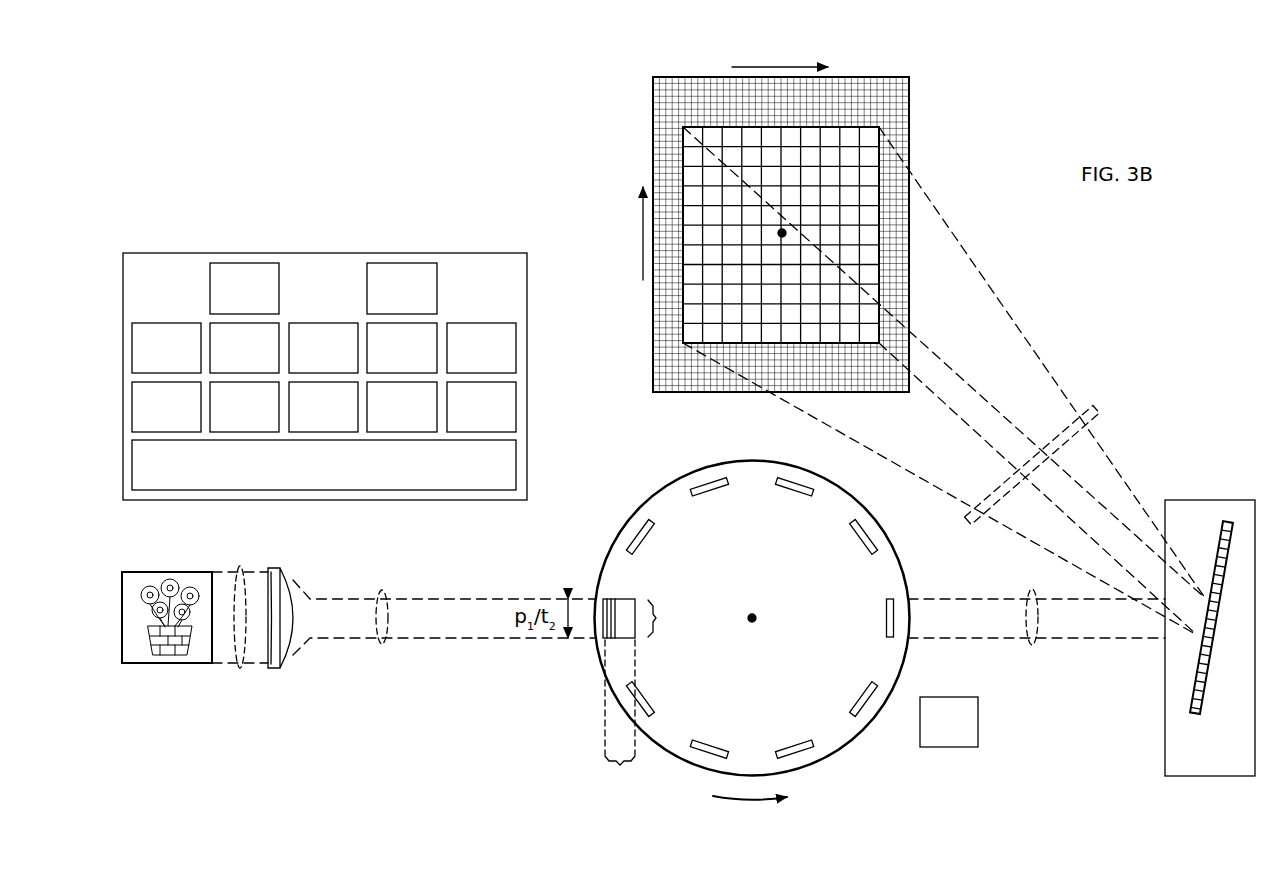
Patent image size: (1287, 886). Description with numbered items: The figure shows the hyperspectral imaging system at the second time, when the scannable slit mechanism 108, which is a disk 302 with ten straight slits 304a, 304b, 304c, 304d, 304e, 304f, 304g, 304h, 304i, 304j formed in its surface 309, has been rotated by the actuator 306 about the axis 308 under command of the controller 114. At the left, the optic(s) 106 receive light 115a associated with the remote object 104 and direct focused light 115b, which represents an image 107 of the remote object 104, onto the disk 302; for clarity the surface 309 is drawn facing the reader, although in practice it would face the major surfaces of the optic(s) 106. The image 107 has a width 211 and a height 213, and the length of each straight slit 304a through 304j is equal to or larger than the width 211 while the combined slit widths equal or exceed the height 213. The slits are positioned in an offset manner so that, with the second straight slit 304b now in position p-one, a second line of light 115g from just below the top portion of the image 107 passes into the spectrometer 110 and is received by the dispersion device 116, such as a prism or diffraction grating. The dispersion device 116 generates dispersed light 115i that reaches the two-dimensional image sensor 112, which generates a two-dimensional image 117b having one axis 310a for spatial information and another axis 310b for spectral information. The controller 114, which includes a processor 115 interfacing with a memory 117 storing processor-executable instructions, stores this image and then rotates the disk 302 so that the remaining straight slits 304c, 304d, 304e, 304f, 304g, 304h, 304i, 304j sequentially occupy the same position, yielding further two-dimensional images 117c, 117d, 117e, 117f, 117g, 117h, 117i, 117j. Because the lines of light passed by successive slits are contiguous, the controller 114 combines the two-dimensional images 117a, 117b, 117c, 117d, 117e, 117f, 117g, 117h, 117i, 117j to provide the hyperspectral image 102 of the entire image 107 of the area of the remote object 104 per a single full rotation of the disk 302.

The hyperspectral image 102 is at (324, 465).
The remote object 104 is at (166, 663).
The optic(s) 106 is at (280, 568).
The image 107 is at (640, 598).
The scannable slit mechanism 108 is at (838, 757).
The spectrometer 110 is at (1210, 776).
The two-dimensional image sensor 112 is at (653, 100).
The controller 114 is at (323, 253).
The processor 115 is at (244, 288).
The light 115a is at (240, 670).
The focused light 115b is at (382, 646).
The second line of light 115g is at (1032, 647).
The dispersed light 115i is at (1093, 414).
The dispersion device 116 is at (1193, 715).
The memory 117 is at (402, 288).
The two-dimensional image 117a is at (166, 348).
The two-dimensional image 117b is at (683, 148).
The two-dimensional image 117c is at (323, 348).
The two-dimensional image 117d is at (402, 348).
The two-dimensional image 117e is at (481, 348).
The two-dimensional image 117f is at (166, 407).
The two-dimensional image 117g is at (244, 407).
The two-dimensional image 117h is at (323, 407).
The two-dimensional image 117i is at (402, 407).
The two-dimensional image 117j is at (481, 407).
The width of the image 211 is at (620, 717).
The height of the image 213 is at (675, 618).
The disk 302 is at (688, 769).
The first straight slit 304a is at (648, 702).
The second straight slit 304b is at (604, 599).
The straight slit 304c is at (631, 528).
The straight slit 304d is at (707, 482).
The straight slit 304e is at (790, 492).
The straight slit 304f is at (872, 530).
The straight slit 304g is at (900, 616).
The straight slit 304h is at (860, 699).
The straight slit 304i is at (793, 745).
The straight slit 304j is at (714, 745).
The actuator 306 is at (949, 722).
The axis 308 is at (753, 626).
The disk surface 309 is at (752, 618).
The axis 310a is at (643, 232).
The axis 310b is at (782, 67).